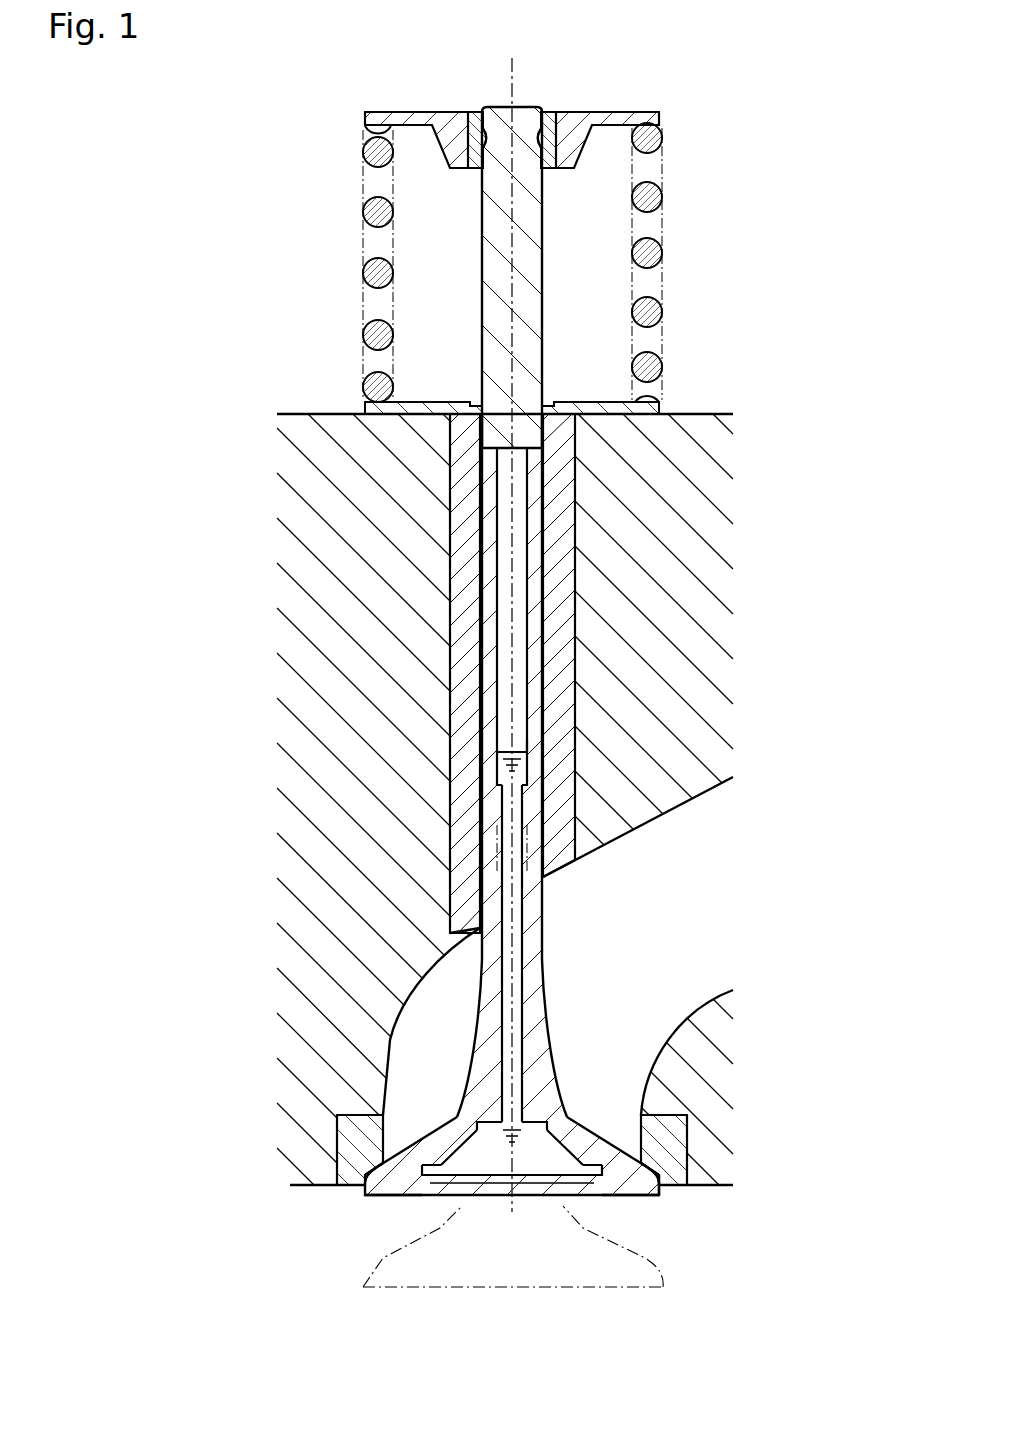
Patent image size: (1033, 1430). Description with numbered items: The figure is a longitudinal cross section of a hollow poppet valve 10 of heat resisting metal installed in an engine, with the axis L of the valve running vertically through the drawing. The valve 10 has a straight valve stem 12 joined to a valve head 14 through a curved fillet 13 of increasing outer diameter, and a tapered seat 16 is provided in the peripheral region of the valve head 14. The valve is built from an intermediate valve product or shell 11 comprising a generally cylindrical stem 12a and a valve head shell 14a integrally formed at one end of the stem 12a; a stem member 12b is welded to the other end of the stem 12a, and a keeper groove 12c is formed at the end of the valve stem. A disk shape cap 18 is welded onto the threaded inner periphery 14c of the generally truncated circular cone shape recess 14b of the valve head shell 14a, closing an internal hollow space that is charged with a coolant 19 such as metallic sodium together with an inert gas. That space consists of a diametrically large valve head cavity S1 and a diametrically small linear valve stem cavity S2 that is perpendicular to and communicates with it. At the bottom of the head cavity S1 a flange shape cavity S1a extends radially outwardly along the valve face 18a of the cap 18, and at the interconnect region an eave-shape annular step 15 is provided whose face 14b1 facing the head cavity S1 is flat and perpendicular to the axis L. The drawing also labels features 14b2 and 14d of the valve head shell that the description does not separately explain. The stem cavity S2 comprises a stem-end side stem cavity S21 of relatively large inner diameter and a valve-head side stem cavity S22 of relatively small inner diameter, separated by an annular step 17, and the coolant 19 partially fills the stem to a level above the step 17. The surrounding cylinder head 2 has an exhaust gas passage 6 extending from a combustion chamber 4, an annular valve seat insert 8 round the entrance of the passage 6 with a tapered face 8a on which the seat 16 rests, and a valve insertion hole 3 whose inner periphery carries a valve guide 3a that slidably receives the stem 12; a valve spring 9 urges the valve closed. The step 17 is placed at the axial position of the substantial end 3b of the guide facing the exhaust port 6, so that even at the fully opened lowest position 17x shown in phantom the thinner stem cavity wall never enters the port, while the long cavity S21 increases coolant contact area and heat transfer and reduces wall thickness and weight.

The axis L is at (515, 92).
The cylinder head 2 is at (661, 505).
The valve insertion hole 3 is at (614, 673).
The valve guide 3a is at (576, 612).
The substantial end of the valve guide 3b is at (558, 868).
The combustion chamber 4 is at (703, 1305).
The exhaust gas passage 6 is at (670, 935).
The annular valve seat insert 8 is at (647, 1208).
The tapered face 8a is at (637, 1197).
The valve spring 9 is at (365, 238).
The hollow poppet valve 10 is at (456, 706).
The intermediate valve product 11 is at (411, 1138).
The valve stem 12 is at (396, 651).
The stem 12a is at (428, 986).
The stem member 12b is at (482, 355).
The keeper groove 12c is at (547, 138).
The curved fillet 13 is at (457, 1144).
The valve head 14 is at (434, 1187).
The valve head shell 14a is at (378, 1203).
The generally truncated circular cone shape recess 14b is at (408, 1207).
The face of the annular step 14b1 is at (487, 1197).
The cap plate inner surface 14b2 is at (447, 1158).
The inner periphery 14c is at (445, 1196).
The head inner surface 14d is at (442, 1168).
The eave-shape annular step 15 is at (486, 1126).
The tapered seat 16 is at (662, 1185).
The annular step 17 is at (498, 772).
The lowest position 17x is at (494, 865).
The disk shape cap 18 is at (558, 1264).
The valve face 18a is at (577, 1198).
The coolant 19 is at (523, 746).
The valve head cavity S1 is at (556, 1150).
The flange shape cavity S1a is at (638, 1192).
The valve stem cavity S2 is at (665, 785).
The stem-end side stem cavity S21 is at (516, 544).
The valve-head side stem cavity S22 is at (521, 987).